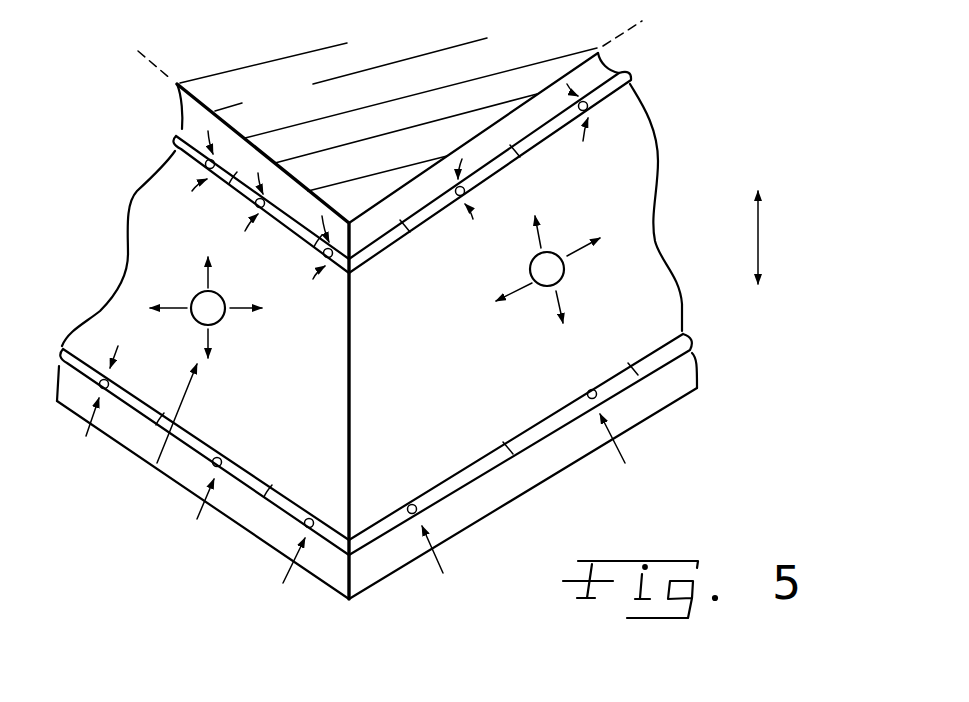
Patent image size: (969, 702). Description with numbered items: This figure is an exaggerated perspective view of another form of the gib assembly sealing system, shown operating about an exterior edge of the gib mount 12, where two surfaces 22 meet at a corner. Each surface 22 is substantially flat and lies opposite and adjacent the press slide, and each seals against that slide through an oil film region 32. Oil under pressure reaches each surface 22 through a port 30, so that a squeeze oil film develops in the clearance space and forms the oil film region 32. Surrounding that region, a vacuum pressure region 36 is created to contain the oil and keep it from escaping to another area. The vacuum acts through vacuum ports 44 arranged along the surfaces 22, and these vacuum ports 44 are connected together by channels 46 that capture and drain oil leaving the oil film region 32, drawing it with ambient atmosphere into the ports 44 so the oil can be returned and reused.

The gib mount 12 is at (617, 150).
The surface 22 is at (308, 449).
The port 30 is at (197, 296).
The oil film region 32 is at (125, 445).
The vacuum pressure region 36 is at (176, 137).
The vacuum ports 44 is at (216, 160).
The channels 46 is at (400, 233).